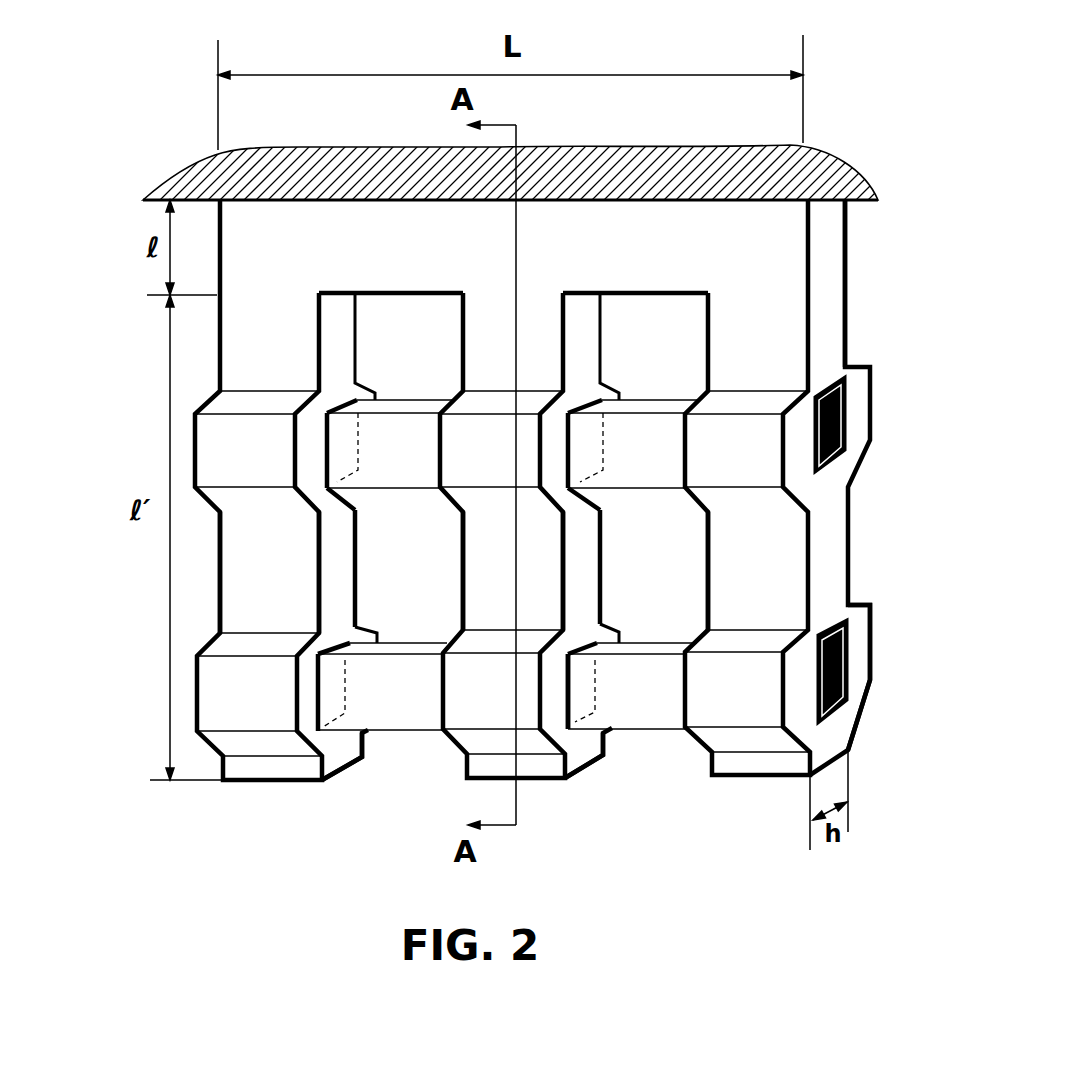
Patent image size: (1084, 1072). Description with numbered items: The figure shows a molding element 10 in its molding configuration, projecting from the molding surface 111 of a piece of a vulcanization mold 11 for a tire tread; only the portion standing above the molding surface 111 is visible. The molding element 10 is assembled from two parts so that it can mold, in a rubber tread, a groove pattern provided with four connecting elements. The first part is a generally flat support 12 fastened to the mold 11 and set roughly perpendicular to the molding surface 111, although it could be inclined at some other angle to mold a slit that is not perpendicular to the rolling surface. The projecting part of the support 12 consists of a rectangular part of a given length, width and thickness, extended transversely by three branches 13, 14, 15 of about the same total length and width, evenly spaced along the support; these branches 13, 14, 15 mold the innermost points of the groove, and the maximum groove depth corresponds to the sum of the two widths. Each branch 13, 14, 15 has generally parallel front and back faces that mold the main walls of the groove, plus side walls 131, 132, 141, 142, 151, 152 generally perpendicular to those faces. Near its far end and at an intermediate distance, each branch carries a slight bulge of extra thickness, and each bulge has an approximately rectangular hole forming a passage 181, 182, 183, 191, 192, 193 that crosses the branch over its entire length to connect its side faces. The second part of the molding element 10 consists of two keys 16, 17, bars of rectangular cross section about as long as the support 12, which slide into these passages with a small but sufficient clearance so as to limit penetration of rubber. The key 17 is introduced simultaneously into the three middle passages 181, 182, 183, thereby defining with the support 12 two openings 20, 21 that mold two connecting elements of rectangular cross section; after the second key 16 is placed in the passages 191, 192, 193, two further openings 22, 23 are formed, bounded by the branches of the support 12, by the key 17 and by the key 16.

The molding element 10 is at (862, 348).
The vulcanization mold 11 is at (620, 177).
The molding surface 111 is at (152, 203).
The support 12 is at (767, 255).
The branch 13 is at (277, 617).
The side wall 131 is at (220, 537).
The side wall 132 is at (343, 585).
The branch 14 is at (537, 560).
The side wall 141 is at (457, 607).
The side wall 142 is at (584, 573).
The branch 15 is at (782, 563).
The side wall 151 is at (708, 592).
The side wall 152 is at (842, 728).
The key 16 is at (648, 695).
The key 17 is at (645, 452).
The passage 181 is at (375, 395).
The passage 182 is at (607, 395).
The passage 183 is at (847, 425).
The passage 191 is at (350, 642).
The passage 192 is at (605, 638).
The passage 193 is at (842, 707).
The opening 20 is at (388, 343).
The opening 21 is at (655, 337).
The opening 22 is at (432, 627).
The opening 23 is at (655, 578).